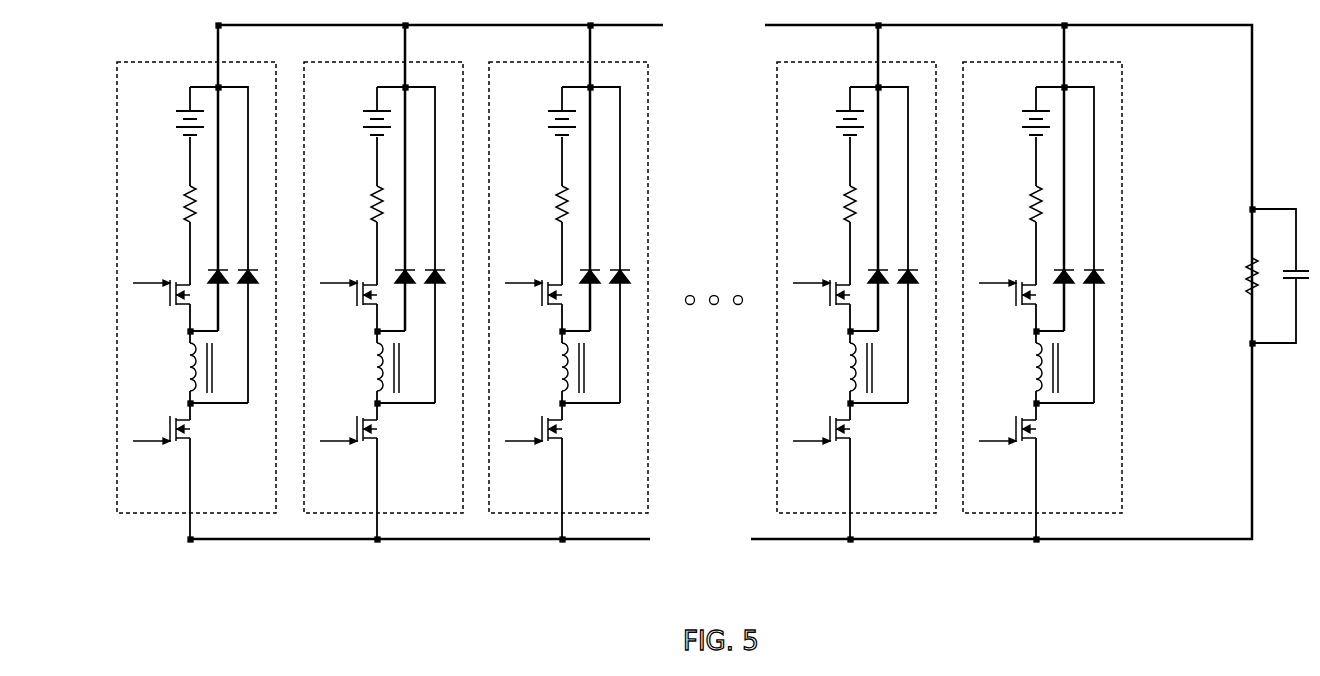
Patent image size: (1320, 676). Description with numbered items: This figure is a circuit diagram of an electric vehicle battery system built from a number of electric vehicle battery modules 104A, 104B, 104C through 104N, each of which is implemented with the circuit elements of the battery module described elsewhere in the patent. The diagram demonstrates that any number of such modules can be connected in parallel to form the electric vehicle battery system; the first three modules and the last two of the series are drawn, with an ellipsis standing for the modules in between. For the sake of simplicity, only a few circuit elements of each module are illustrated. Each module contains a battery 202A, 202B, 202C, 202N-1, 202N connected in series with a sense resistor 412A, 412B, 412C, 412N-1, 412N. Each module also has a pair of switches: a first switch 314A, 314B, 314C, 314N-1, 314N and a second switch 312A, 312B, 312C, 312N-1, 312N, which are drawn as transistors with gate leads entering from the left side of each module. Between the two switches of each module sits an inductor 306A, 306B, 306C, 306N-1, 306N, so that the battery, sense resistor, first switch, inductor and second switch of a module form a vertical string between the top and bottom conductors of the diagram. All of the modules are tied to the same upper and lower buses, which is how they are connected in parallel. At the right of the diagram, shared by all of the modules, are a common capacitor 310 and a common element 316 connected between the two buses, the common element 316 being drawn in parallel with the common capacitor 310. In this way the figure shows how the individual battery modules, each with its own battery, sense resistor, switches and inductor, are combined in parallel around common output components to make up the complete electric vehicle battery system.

The electric vehicle battery module 104A is at (173, 515).
The electric vehicle battery module 104B is at (381, 305).
The electric vehicle battery module 104C is at (567, 305).
The electric vehicle battery module 104N is at (1038, 305).
The battery 202A is at (173, 127).
The battery 202B is at (350, 112).
The battery 202C is at (535, 112).
The battery 202N-1 is at (823, 112).
The battery 202N is at (1011, 112).
The sense resistor 412A is at (187, 200).
The sense resistor 412B is at (352, 194).
The sense resistor 412C is at (537, 194).
The sense resistor 412N-1 is at (819, 192).
The sense resistor 412N is at (1013, 194).
The switch 314A is at (180, 283).
The switch 314B is at (348, 276).
The switch 314C is at (533, 276).
The switch 314N-1 is at (817, 271).
The switch 314N is at (1007, 276).
The inductor 306A is at (186, 357).
The inductor 306B is at (361, 357).
The inductor 306C is at (546, 357).
The inductor 306N-1 is at (829, 357).
The inductor 306N is at (1020, 357).
The switch 312A is at (178, 413).
The switch 312B is at (345, 408).
The switch 312C is at (530, 408).
The switch 312N-1 is at (817, 407).
The switch 312N is at (1005, 408).
The common element 316 is at (1248, 262).
The common capacitor 310 is at (1303, 272).